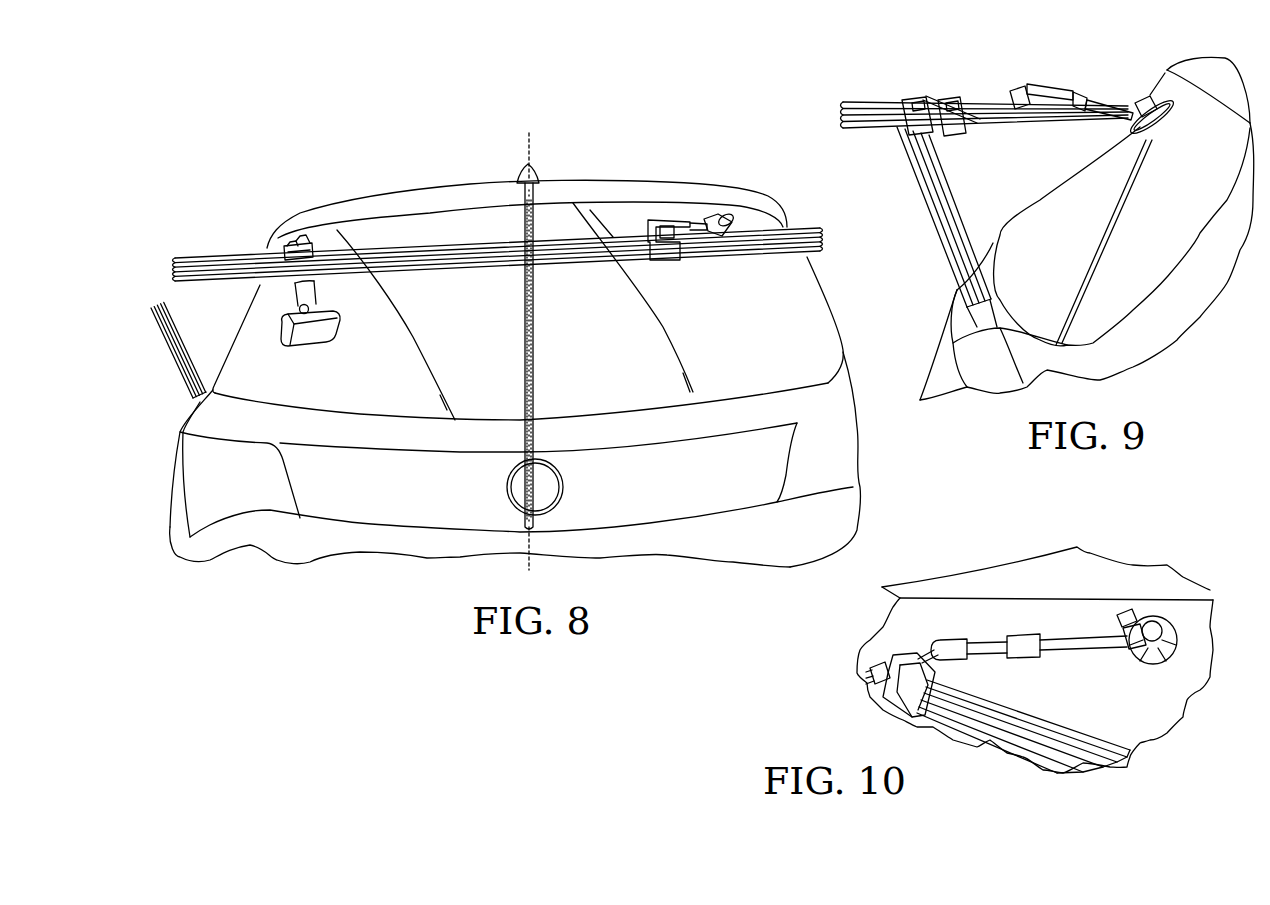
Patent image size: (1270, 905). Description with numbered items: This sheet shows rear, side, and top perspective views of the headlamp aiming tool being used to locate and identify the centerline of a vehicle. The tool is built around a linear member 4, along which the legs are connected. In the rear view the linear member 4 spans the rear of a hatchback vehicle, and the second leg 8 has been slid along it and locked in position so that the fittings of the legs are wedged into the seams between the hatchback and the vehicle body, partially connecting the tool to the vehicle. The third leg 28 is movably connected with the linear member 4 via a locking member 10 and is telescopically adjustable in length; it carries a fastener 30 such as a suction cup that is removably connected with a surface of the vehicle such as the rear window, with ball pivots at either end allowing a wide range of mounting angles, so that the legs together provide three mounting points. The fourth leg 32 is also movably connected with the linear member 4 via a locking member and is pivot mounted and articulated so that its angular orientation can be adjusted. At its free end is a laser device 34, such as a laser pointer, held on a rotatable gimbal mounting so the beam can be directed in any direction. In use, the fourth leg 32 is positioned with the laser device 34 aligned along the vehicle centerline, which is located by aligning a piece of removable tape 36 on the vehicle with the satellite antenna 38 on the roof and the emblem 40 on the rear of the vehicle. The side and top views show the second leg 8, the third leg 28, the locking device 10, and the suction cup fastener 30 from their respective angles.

In FIG. 8, the linear member 4 is at (775, 258).
In FIG. 9, the linear member 4 is at (985, 102).
In FIG. 10, the linear member 4 is at (1012, 737).
In FIG. 9, the second leg 8 is at (928, 200).
In FIG. 10, the locking device 10 is at (893, 700).
In FIG. 9, the third leg 28 is at (1060, 92).
In FIG. 10, the third leg 28 is at (1067, 642).
In FIG. 8, the fastener 30 is at (700, 213).
In FIG. 9, the fastener 30 is at (1140, 102).
In FIG. 10, the fastener 30 is at (1172, 620).
In FIG. 8, the fourth leg 32 is at (286, 280).
In FIG. 8, the laser device 34 is at (320, 333).
In FIG. 8, the removable tape 36 is at (535, 362).
In FIG. 8, the satellite antenna 38 is at (538, 175).
In FIG. 8, the emblem 40 is at (565, 487).